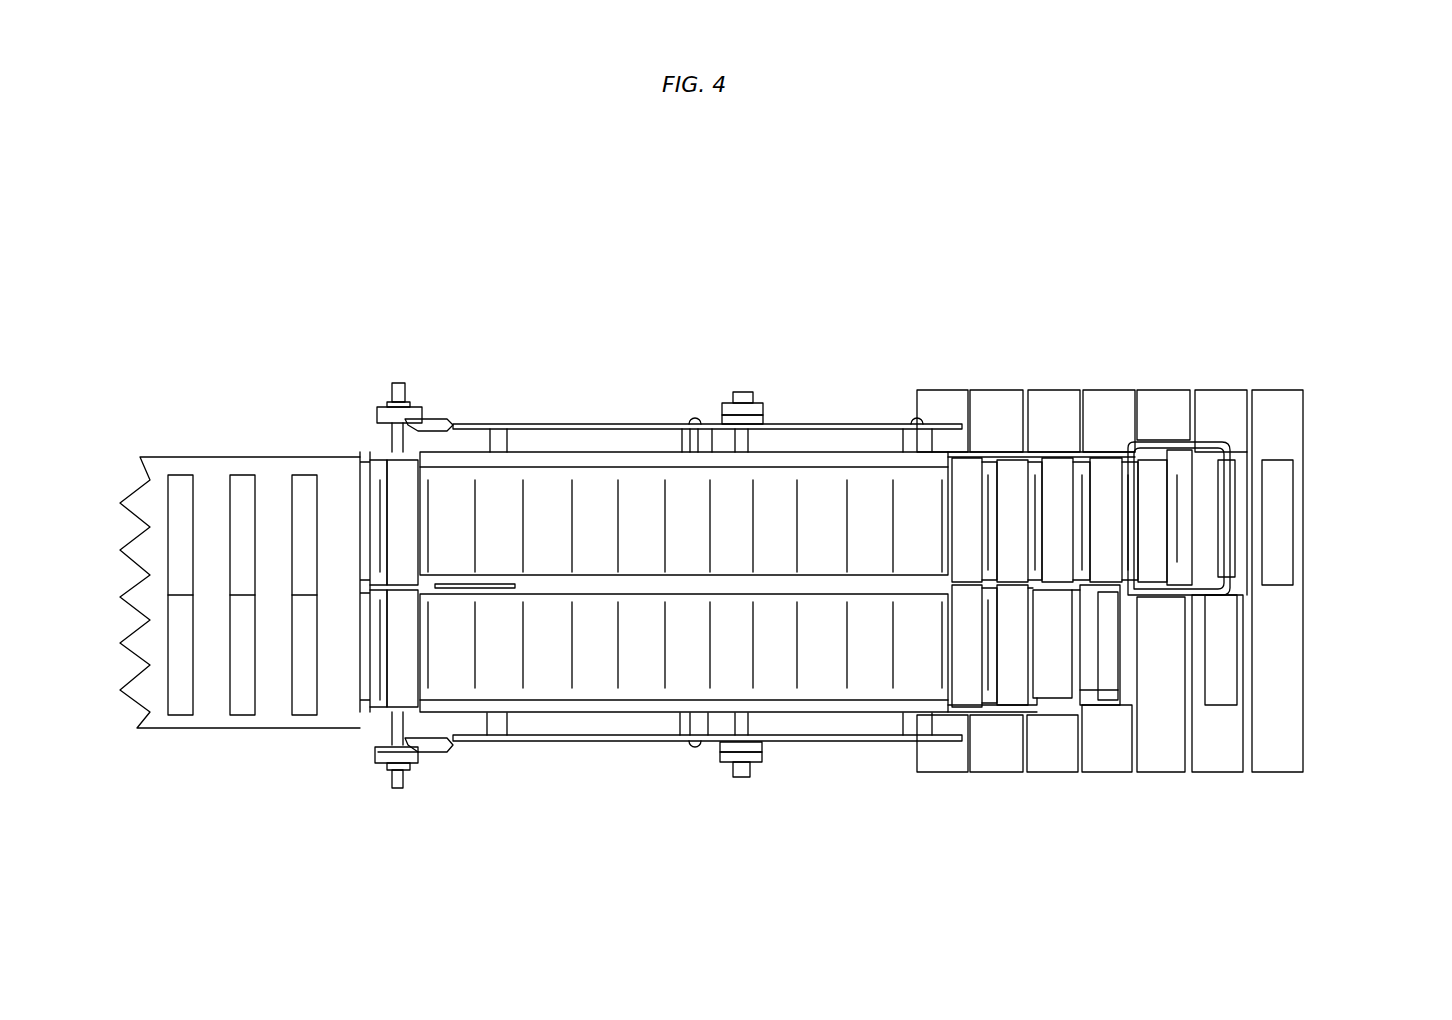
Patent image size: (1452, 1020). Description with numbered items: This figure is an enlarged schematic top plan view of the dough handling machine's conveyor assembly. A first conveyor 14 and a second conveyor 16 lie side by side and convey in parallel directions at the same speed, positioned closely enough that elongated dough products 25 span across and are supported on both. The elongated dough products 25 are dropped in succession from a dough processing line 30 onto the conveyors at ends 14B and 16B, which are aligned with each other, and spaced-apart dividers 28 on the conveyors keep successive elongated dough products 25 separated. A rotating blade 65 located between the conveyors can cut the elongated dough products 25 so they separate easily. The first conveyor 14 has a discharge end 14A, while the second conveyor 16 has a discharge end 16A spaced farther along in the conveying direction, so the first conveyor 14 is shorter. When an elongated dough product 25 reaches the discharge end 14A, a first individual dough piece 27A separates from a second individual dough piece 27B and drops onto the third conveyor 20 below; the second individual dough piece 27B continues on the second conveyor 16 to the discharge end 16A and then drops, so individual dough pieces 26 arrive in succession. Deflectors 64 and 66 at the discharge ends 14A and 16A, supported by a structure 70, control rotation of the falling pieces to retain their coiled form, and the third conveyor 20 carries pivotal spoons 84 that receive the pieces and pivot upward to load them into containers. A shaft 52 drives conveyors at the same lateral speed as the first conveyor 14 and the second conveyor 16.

The first conveyor 14 is at (828, 700).
The discharge end 14A is at (1048, 720).
The end 14B is at (375, 723).
The second conveyor 16 is at (823, 465).
The discharge end 16A is at (1217, 433).
The end 16B is at (373, 440).
The third conveyor 20 is at (1307, 370).
The elongated dough products 25 is at (288, 430).
The individual dough pieces 26 is at (1333, 452).
The first individual dough piece 27A is at (1088, 707).
The second individual dough piece 27B is at (1068, 457).
The dividers 28 is at (572, 482).
The dough processing line 30 is at (197, 457).
The shaft 52 is at (440, 752).
The deflector 64 is at (1152, 597).
The rotating blade 65 is at (483, 590).
The deflector 66 is at (1238, 470).
The structure 70 is at (1118, 690).
The spoons 84 is at (1207, 390).